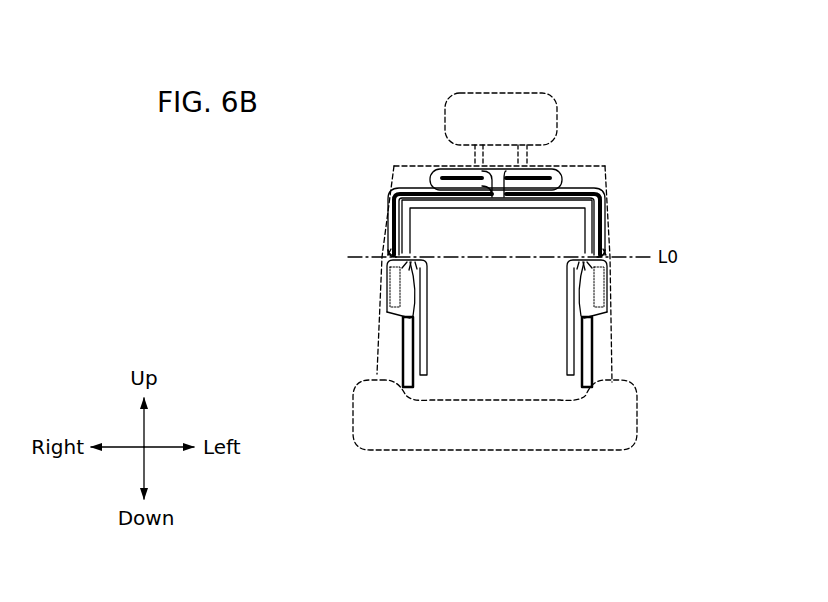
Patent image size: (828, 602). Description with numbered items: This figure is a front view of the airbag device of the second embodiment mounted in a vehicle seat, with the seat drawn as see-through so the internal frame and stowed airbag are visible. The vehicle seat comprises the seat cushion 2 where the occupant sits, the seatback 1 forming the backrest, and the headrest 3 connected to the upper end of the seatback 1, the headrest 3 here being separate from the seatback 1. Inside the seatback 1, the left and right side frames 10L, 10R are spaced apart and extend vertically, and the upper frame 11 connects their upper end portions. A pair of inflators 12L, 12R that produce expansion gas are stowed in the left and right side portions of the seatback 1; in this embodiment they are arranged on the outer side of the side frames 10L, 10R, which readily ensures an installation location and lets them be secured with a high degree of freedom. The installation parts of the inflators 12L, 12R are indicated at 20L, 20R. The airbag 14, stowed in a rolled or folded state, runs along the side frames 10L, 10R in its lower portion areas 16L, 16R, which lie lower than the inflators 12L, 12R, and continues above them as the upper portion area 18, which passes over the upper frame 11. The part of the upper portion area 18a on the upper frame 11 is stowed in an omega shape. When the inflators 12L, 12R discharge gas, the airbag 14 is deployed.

The seatback 1 is at (483, 297).
The seat cushion 2 is at (492, 450).
The headrest 3 is at (550, 94).
The side frame 10R is at (400, 378).
The side frame 10L is at (587, 372).
The upper frame 11 is at (425, 206).
The inflator 12R is at (387, 298).
The inflator 12L is at (608, 288).
The airbag 14 is at (388, 228).
The lower portion area 16R is at (414, 340).
The lower portion area 16L is at (583, 337).
The upper portion area 18 is at (604, 205).
The upper portion area on the seat frame 18a is at (560, 170).
The installation part 20R is at (395, 262).
The installation part 20L is at (608, 262).